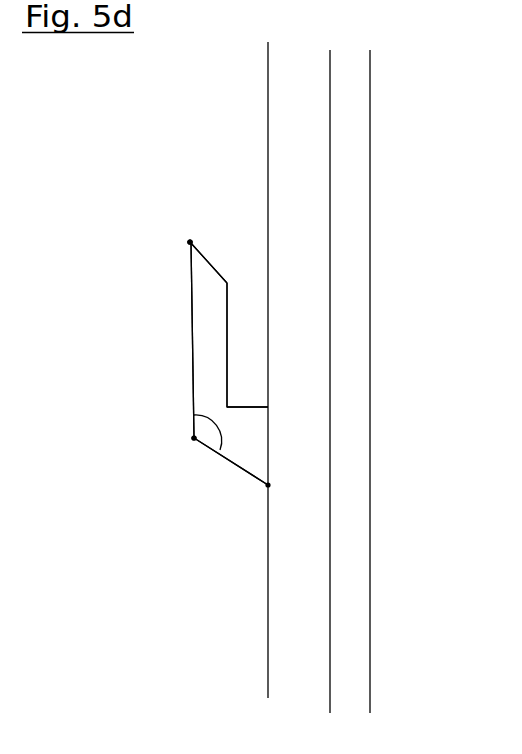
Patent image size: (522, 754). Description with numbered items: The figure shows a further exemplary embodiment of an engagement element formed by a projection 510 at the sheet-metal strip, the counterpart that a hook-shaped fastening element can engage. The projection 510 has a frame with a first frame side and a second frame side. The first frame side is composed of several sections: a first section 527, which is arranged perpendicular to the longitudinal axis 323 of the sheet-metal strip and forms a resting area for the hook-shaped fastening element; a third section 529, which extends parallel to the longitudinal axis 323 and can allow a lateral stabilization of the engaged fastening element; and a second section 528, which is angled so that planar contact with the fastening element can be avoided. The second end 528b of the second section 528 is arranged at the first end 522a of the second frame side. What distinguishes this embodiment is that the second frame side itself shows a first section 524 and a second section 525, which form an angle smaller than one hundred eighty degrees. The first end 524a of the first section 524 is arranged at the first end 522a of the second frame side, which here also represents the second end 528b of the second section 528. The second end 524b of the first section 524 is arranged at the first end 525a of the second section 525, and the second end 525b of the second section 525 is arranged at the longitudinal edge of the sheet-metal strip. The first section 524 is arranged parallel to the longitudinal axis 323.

The projection 510 is at (207, 300).
The first section of the second frame side 524 is at (191, 314).
The first end of the first section 524a is at (190, 242).
The second end of the second section 528b is at (254, 187).
The first end of the second frame side 522a is at (250, 207).
The second section of the first frame side 528 is at (204, 260).
The third section of the first frame side 529 is at (227, 344).
The first section of the first frame side 527 is at (250, 407).
The second end of the first section 524b is at (194, 438).
The first end of the second section 525a is at (110, 445).
The second section of the second frame side 525 is at (230, 460).
The second end of the second section 525b is at (268, 485).
The longitudinal axis 323 is at (330, 645).